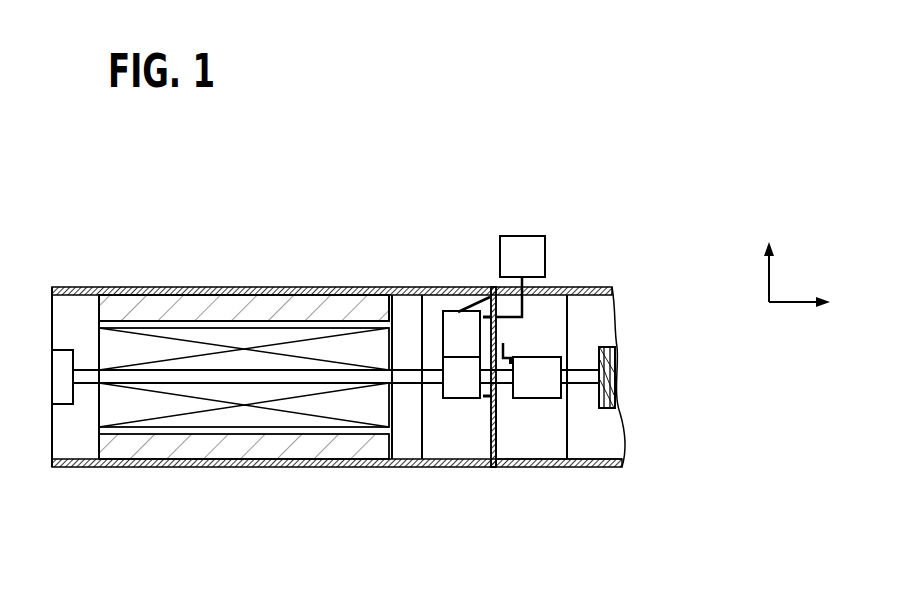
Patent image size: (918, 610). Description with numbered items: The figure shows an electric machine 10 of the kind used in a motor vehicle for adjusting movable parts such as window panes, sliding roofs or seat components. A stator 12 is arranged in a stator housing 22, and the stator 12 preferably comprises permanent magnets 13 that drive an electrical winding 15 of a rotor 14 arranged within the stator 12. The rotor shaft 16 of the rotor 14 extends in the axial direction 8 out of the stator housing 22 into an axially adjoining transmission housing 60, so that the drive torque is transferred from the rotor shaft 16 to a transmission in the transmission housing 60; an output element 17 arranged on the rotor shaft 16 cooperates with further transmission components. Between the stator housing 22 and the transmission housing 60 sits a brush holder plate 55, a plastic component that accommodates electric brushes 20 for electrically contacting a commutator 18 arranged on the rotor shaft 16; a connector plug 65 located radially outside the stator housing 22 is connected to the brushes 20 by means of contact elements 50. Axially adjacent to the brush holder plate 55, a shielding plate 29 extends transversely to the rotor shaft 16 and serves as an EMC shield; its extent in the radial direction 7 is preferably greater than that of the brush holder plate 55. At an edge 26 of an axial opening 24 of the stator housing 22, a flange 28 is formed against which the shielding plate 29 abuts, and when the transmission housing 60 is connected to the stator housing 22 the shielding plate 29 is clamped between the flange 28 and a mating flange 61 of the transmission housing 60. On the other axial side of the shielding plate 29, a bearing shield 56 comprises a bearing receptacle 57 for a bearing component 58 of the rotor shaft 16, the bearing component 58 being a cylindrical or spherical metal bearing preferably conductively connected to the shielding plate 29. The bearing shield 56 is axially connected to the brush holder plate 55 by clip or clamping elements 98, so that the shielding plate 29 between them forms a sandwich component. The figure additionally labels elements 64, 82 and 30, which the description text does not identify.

The electric machine 10 is at (80, 281).
The permanent magnets 13 is at (145, 305).
The stator housing 22 is at (192, 303).
The stator 12 is at (252, 303).
The rotor shaft 16 is at (313, 377).
The electric brushes 20 is at (443, 292).
The axial opening 24 is at (452, 318).
The contact elements 50 is at (490, 360).
The control unit 64 is at (517, 245).
The connector plug 65 is at (503, 352).
The coupling 82 is at (535, 341).
The bearing receptacle 57 is at (548, 368).
The bearing component 58 is at (559, 357).
The output element 17 is at (617, 363).
The clip or clamping elements 98 is at (502, 402).
The bearing shield 56 is at (566, 433).
The transmission housing 60 is at (603, 466).
The opening 30 is at (497, 429).
The shielding plate 29 is at (543, 482).
The flange 28 is at (485, 462).
The edge 26 is at (480, 425).
The mating flange 61 is at (500, 462).
The brush holder plate 55 is at (437, 447).
The commutator 18 is at (452, 392).
The rotor 14 is at (302, 420).
The electrical winding 15 is at (248, 413).
The radial direction 7 is at (769, 280).
The axial direction 8 is at (787, 305).